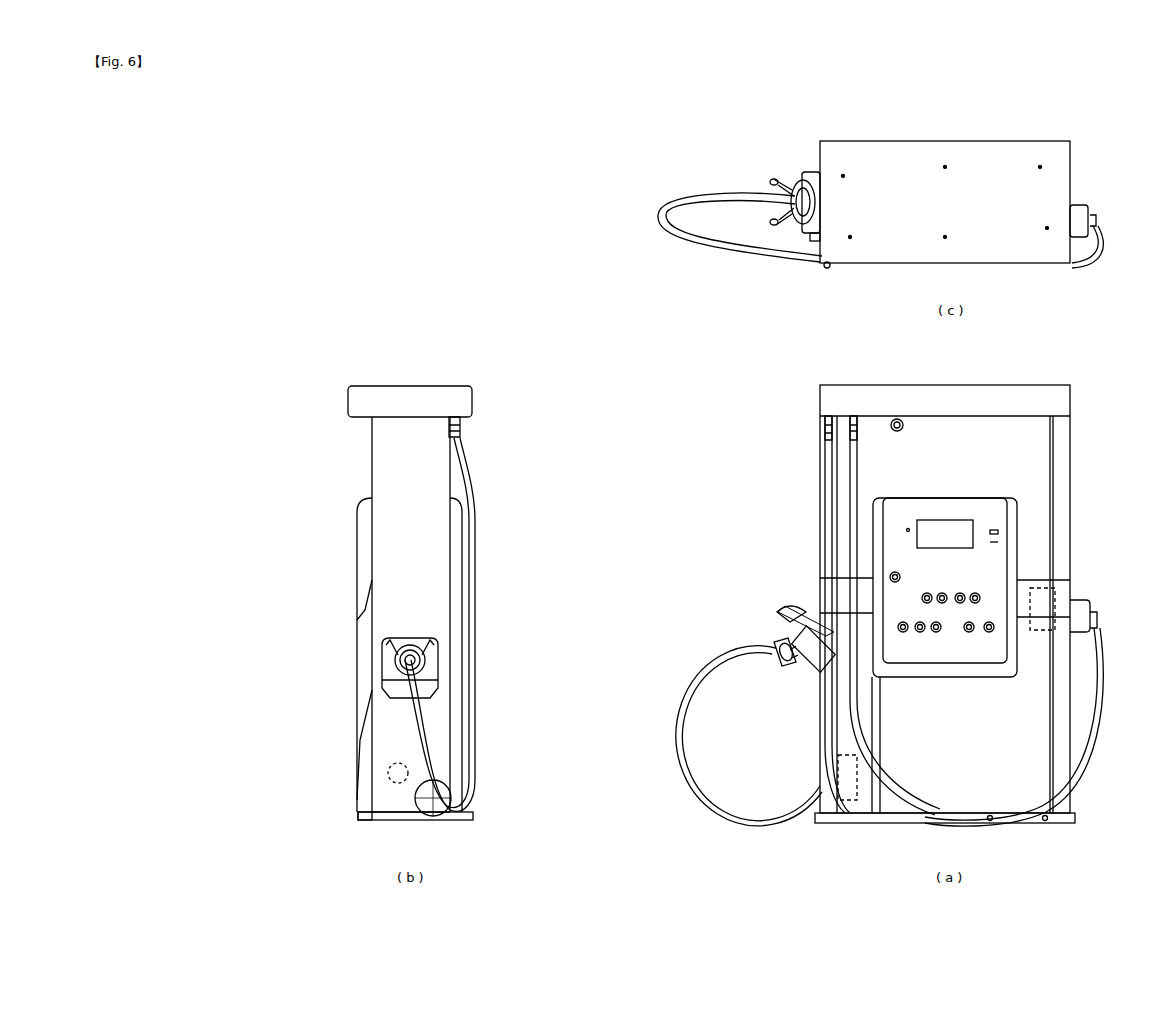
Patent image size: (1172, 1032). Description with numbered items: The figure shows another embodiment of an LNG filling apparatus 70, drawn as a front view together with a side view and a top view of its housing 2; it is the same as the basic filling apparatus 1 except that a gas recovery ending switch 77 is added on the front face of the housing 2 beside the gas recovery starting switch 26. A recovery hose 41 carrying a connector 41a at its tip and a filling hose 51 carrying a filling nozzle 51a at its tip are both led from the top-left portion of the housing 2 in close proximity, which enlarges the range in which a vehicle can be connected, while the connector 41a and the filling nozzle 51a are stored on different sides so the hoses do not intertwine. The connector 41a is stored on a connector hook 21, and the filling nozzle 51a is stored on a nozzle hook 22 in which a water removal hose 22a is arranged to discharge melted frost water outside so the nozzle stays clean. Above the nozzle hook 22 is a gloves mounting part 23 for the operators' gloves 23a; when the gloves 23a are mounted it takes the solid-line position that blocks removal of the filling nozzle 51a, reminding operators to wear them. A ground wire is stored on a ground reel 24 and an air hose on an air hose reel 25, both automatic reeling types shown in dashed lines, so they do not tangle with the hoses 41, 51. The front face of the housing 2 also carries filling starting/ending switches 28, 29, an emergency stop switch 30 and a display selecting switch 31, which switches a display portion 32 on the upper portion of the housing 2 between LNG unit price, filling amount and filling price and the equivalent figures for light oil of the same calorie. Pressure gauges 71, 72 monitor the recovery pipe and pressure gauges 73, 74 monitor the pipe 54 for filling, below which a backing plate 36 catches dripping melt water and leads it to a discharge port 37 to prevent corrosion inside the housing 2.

The filling apparatus 1 is at (746, 119).
The housing 2 is at (1071, 153).
The connector hook 21 is at (1080, 206).
The nozzle hook 22 is at (805, 245).
The water removal hose 22a is at (888, 690).
The gloves mounting part 23 is at (780, 632).
The gloves 23a is at (785, 608).
The ground reel 24 is at (835, 790).
The air hose reel 25 is at (1055, 598).
The gas recovery starting switch 26 is at (969, 632).
The filling starting/ending switch 28 is at (903, 632).
The filling starting/ending switch 29 is at (920, 632).
The emergency stop switch 30 is at (936, 632).
The display selecting switch 31 is at (895, 572).
The display portion 32 is at (950, 530).
The backing plate 36 is at (415, 800).
The discharge port 37 is at (432, 816).
The recovery hose 41 is at (1098, 248).
The connector 41a is at (1098, 215).
The filling hose 51 is at (700, 246).
The filling nozzle 51a is at (778, 230).
The pipe for filling 54 is at (388, 770).
The filling apparatus 70 is at (778, 402).
The pressure gauge 71 is at (937, 598).
The pressure gauge 72 is at (922, 598).
The pressure gauge 73 is at (962, 592).
The pressure gauge 74 is at (975, 592).
The gas recovery ending switch 77 is at (989, 632).